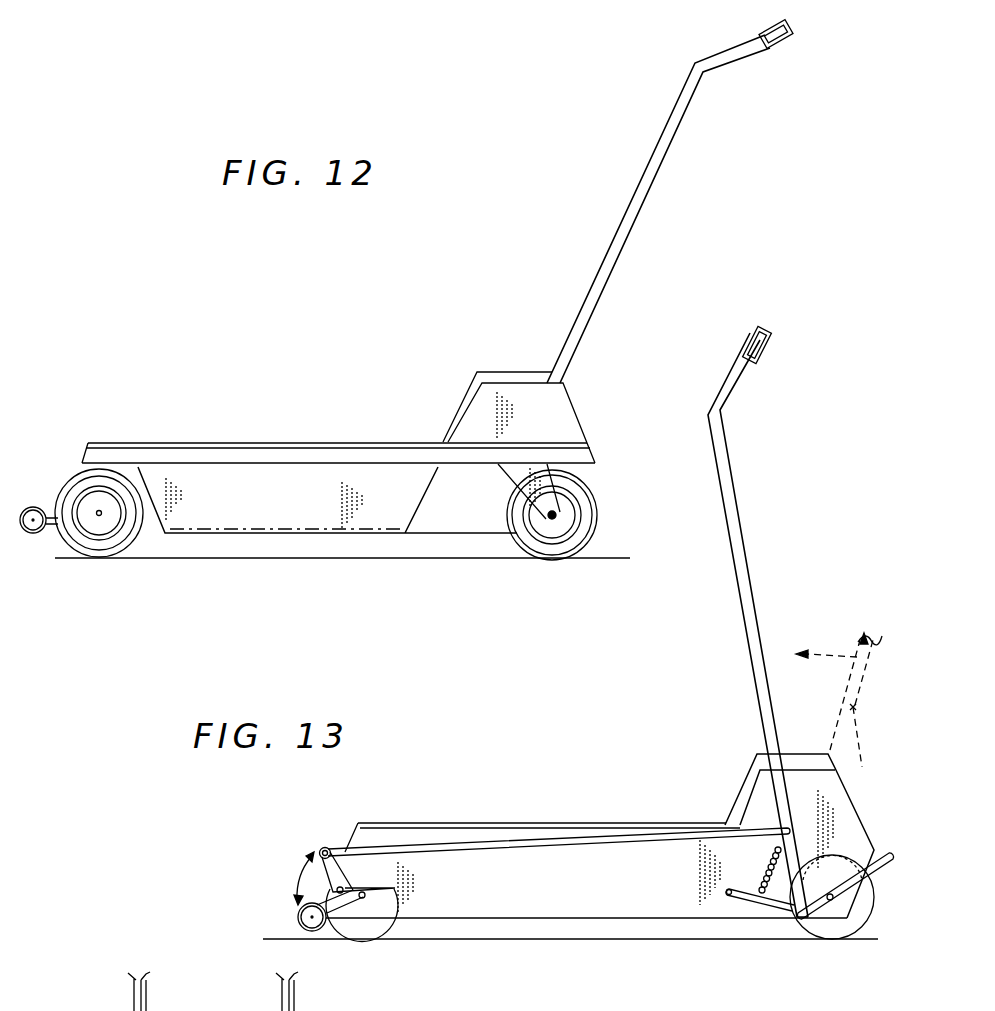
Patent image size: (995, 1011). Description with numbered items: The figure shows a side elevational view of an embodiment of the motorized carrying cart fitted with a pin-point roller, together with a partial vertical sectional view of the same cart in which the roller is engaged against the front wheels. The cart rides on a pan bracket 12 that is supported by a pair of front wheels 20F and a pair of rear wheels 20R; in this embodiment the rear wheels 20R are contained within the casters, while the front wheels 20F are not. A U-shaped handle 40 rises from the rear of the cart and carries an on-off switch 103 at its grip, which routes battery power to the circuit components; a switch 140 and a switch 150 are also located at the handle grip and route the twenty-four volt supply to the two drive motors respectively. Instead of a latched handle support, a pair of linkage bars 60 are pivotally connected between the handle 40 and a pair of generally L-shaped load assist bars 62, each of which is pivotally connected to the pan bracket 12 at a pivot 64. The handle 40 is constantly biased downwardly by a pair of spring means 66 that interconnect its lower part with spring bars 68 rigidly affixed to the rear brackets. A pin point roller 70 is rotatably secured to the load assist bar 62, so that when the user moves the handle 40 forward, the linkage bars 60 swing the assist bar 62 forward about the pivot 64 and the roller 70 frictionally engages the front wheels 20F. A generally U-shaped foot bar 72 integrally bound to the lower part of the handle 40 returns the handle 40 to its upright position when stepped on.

In FIG. 12, the pan bracket 12 is at (56, 582).
In FIG. 12, the front wheels 20F is at (112, 553).
In FIG. 13, the front wheels 20F is at (375, 927).
In FIG. 12, the rear wheels 20R is at (567, 548).
In FIG. 13, the rear wheels 20R is at (825, 927).
In FIG. 12, the handle 40 is at (608, 262).
In FIG. 13, the handle 40 is at (747, 590).
In FIG. 12, the on-off switch 103 is at (766, 18).
In FIG. 13, the switch 140 is at (749, 333).
In FIG. 13, the switch 150 is at (770, 343).
In FIG. 13, the linkage bars 60 is at (507, 842).
In FIG. 13, the load assist bars 62 is at (338, 877).
In FIG. 13, the pivot 64 is at (377, 890).
In FIG. 13, the spring means 66 is at (765, 862).
In FIG. 13, the spring bars 68 is at (753, 900).
In FIG. 13, the pin point roller 70 is at (290, 918).
In FIG. 13, the foot bar 72 is at (860, 933).